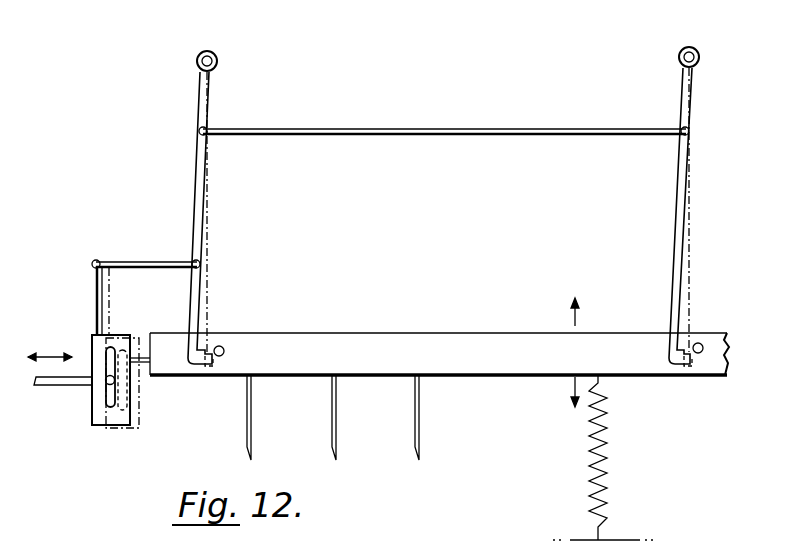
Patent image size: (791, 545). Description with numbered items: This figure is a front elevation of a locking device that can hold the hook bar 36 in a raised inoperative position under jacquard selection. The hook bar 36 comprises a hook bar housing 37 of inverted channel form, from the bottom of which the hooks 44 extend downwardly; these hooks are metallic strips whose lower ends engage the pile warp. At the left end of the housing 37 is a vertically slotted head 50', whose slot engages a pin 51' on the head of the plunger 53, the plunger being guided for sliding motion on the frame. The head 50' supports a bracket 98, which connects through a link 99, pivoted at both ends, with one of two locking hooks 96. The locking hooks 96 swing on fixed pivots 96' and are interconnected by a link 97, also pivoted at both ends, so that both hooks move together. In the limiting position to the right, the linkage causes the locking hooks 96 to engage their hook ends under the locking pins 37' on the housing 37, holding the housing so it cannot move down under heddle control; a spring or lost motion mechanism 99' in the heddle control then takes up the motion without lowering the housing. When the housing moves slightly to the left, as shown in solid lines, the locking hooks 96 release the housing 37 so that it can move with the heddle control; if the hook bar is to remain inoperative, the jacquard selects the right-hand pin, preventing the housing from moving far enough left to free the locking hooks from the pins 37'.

The hook bar 36 is at (472, 338).
The hook bar housing 37 is at (415, 315).
The locking pins 37' is at (487, 325).
The hooks 44 is at (332, 417).
The vertically slotted head 50' is at (97, 395).
The pin 51' is at (144, 394).
The plunger 53 is at (52, 386).
The locking hooks 96 is at (419, 217).
The fixed pivots 96' is at (448, 67).
The link 97 is at (463, 128).
The bracket 98 is at (96, 294).
The link 99 is at (146, 243).
The spring or lost motion mechanism 99' is at (607, 457).